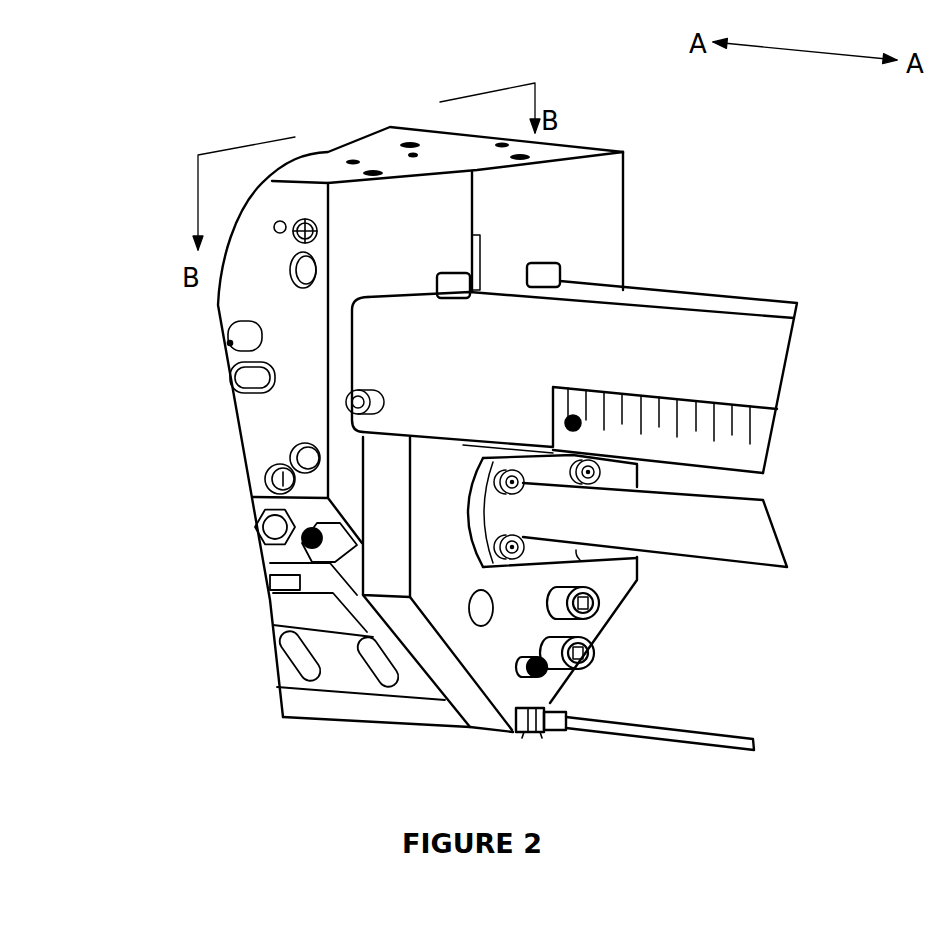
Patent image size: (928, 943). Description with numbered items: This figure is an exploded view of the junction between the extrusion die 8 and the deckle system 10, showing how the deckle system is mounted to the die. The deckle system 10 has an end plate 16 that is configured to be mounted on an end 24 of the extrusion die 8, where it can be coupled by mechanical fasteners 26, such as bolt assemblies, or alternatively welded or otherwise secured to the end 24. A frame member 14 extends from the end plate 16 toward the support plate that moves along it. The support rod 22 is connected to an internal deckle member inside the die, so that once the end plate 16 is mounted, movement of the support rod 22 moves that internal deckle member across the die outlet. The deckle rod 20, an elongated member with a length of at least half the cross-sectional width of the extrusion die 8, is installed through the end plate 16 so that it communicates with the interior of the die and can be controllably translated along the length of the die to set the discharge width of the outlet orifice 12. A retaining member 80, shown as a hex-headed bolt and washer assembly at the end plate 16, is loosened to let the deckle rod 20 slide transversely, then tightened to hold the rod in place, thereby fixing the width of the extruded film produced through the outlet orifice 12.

The extrusion die 8 is at (578, 130).
The deckle system 10 is at (705, 168).
The outlet orifice 12 is at (343, 718).
The frame member 14 is at (697, 303).
The end plate 16 is at (468, 695).
The deckle rod 20 is at (680, 733).
The support rod 22 is at (733, 512).
The end of extrusion die 24 is at (345, 297).
The mechanical fasteners 26 is at (597, 605).
The retaining member 80 is at (560, 733).